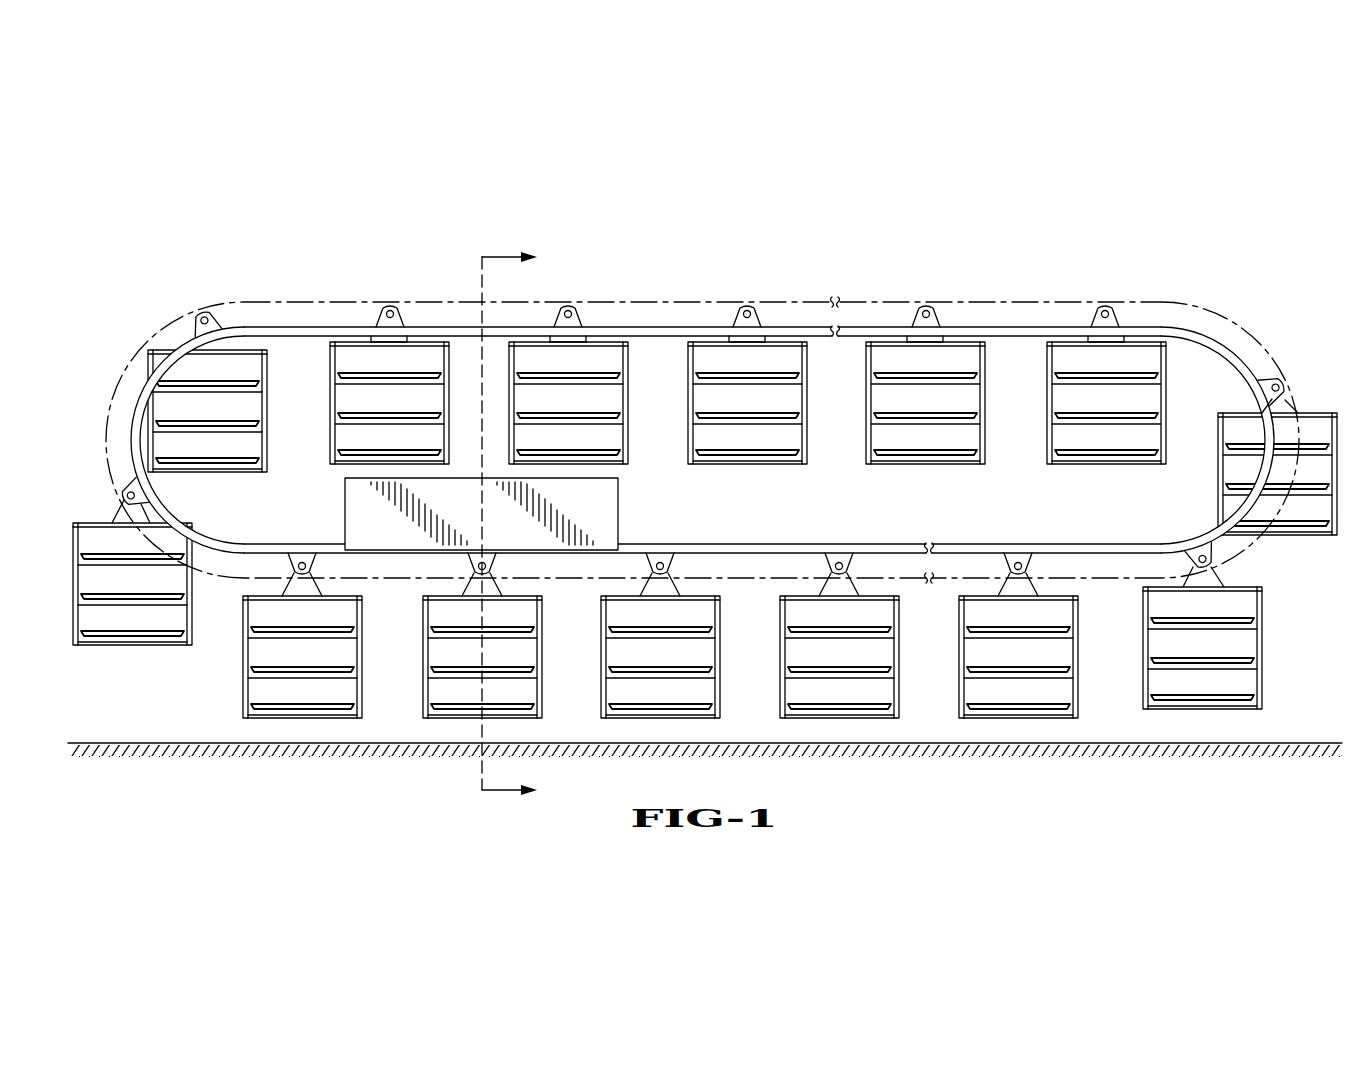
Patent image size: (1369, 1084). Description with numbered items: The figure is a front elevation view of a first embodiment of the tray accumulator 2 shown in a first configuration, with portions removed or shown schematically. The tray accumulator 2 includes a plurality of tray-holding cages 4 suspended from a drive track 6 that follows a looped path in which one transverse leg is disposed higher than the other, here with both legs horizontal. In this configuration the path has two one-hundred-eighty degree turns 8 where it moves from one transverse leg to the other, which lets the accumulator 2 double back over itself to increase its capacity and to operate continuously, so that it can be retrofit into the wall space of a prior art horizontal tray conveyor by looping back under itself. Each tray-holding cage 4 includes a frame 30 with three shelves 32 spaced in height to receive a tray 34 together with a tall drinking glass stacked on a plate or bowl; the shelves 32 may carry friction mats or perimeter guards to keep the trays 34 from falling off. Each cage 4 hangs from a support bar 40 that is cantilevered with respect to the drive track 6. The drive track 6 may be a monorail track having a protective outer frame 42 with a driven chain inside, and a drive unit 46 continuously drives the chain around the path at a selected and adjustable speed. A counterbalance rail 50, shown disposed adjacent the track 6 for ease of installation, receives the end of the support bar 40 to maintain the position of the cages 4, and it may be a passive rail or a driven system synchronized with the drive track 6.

The tray accumulator 2 is at (1048, 208).
The tray-holding cage 4 is at (767, 474).
The drive track 6 is at (1016, 313).
The 180 degree turn 8 is at (1258, 342).
The frame 30 is at (290, 703).
The shelf 32 is at (335, 718).
The tray 34 is at (334, 705).
The support bar 40 is at (387, 306).
The protective outer frame 42 is at (772, 543).
The drive unit 46 is at (608, 502).
The counterbalance rail 50 is at (253, 300).